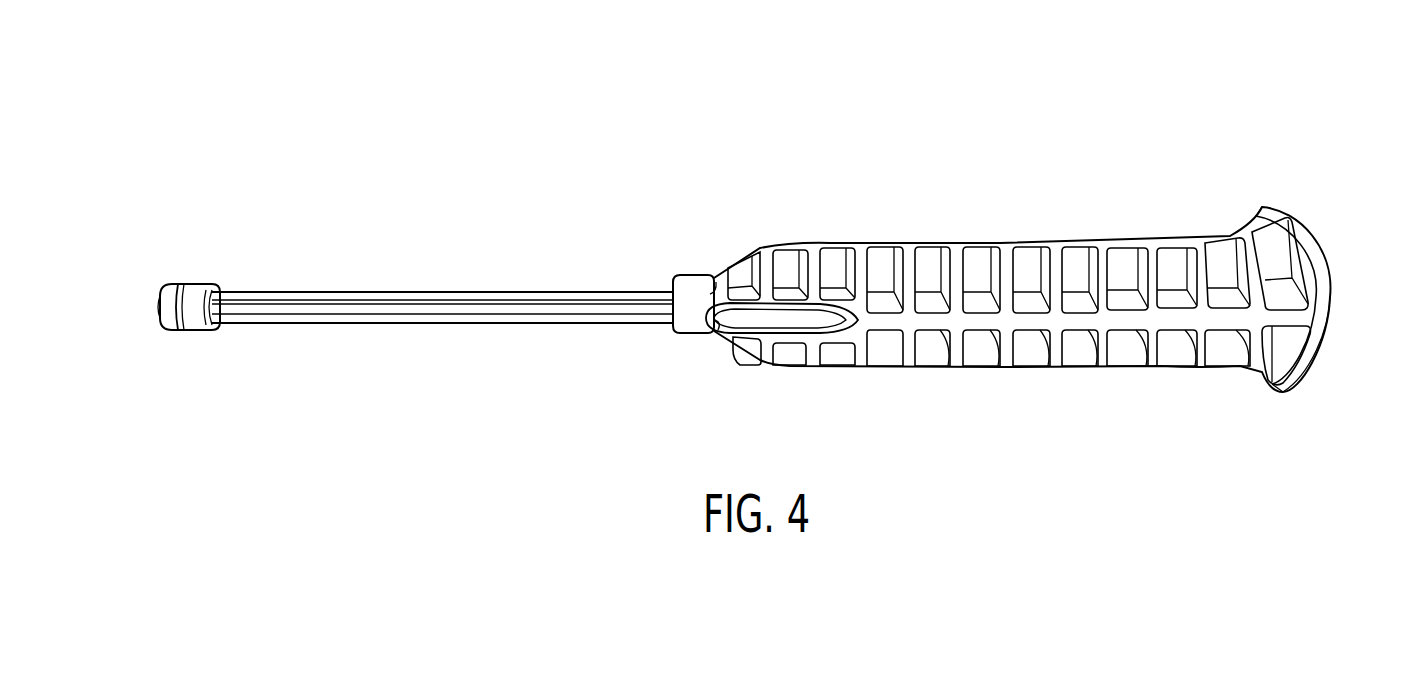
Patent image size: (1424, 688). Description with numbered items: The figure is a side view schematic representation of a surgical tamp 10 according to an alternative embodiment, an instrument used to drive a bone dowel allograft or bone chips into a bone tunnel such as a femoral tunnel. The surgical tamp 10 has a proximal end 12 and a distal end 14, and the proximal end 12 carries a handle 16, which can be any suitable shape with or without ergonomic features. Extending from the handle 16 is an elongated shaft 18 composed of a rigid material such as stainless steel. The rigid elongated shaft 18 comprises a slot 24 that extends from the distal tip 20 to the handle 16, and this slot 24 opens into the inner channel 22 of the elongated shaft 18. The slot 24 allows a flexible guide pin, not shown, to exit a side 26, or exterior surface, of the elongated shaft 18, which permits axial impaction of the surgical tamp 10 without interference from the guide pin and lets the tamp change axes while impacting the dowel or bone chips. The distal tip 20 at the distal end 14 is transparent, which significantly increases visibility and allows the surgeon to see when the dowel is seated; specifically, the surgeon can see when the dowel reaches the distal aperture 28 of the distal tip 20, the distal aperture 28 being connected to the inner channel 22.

The surgical tamp 10 is at (553, 108).
The proximal end 12 is at (1236, 162).
The distal end 14 is at (247, 200).
The handle 16 is at (990, 243).
The elongated shaft 18 is at (510, 292).
The distal tip 20 is at (178, 284).
The inner channel 22 is at (1352, 298).
The slot 24 is at (442, 313).
The side 26 is at (528, 323).
The distal aperture 28 is at (140, 305).